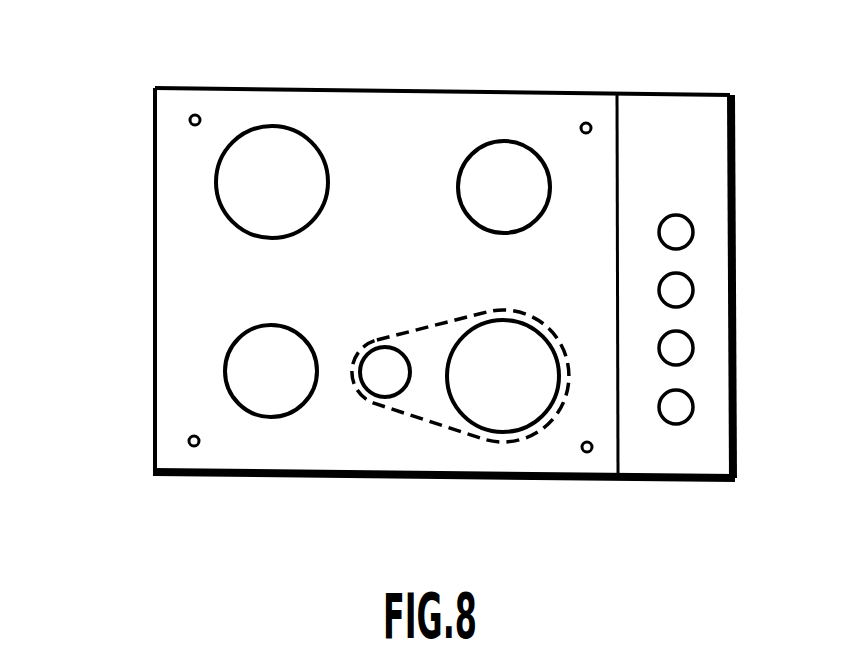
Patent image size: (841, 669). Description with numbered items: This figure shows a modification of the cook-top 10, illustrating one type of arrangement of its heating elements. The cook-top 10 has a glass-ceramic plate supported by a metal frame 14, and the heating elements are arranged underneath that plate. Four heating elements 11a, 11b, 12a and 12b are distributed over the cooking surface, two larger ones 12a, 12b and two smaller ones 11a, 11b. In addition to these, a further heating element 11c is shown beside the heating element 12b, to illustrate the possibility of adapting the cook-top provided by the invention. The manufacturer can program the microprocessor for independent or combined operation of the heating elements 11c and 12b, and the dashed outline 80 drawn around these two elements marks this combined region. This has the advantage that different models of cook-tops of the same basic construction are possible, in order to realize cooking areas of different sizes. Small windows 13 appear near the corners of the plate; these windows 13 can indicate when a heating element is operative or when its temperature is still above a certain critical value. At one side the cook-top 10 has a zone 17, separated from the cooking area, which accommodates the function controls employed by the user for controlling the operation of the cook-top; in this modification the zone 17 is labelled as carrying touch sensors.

The cook-top 10 is at (130, 189).
The metal frame 14 is at (155, 402).
The windows 13 is at (198, 114).
The heating element 12a is at (270, 125).
The heating element 11b is at (511, 140).
The heating element 11a is at (283, 417).
The heating element 11c is at (405, 395).
The heating element 12b is at (521, 432).
The dashed outline of dual burner region 80 is at (447, 322).
The zone 17 is at (688, 462).